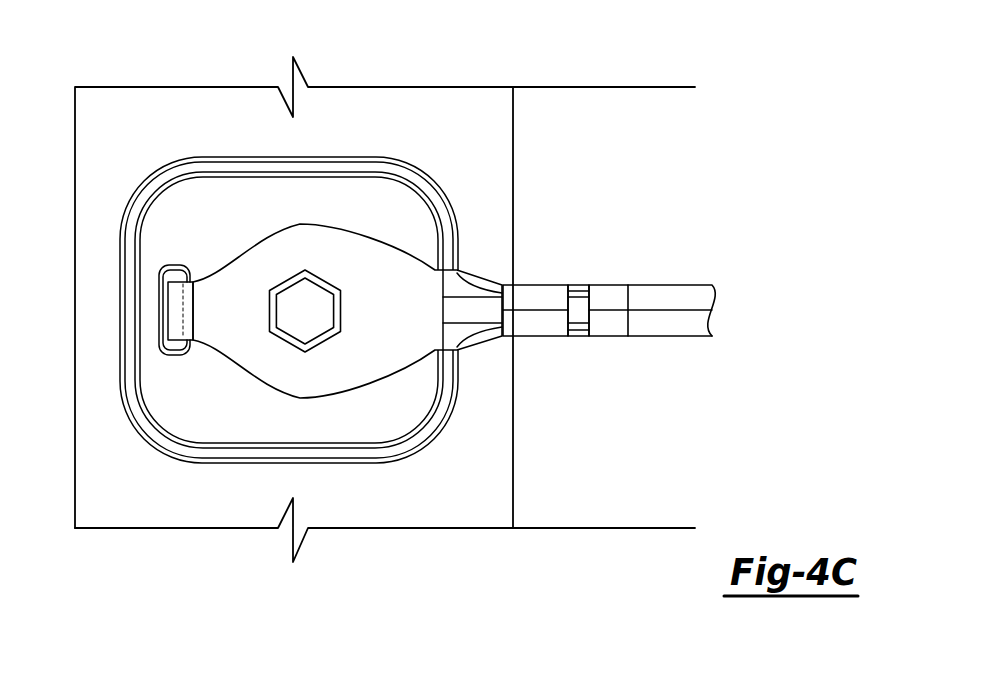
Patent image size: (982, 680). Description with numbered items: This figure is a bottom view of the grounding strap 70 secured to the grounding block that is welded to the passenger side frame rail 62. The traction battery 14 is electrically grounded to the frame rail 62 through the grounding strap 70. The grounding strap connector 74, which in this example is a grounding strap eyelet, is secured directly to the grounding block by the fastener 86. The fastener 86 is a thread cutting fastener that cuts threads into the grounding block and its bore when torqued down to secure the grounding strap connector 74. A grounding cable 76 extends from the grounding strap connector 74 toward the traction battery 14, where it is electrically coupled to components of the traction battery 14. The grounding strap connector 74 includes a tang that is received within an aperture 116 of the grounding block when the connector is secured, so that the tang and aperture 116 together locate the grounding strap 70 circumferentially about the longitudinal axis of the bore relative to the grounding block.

The frame rail 62 is at (147, 117).
The traction battery 14 is at (588, 117).
The grounding strap connector 74 is at (297, 223).
The fastener 86 is at (303, 310).
The aperture 116 is at (175, 348).
The grounding strap 70 is at (665, 298).
The grounding cable 76 is at (665, 323).